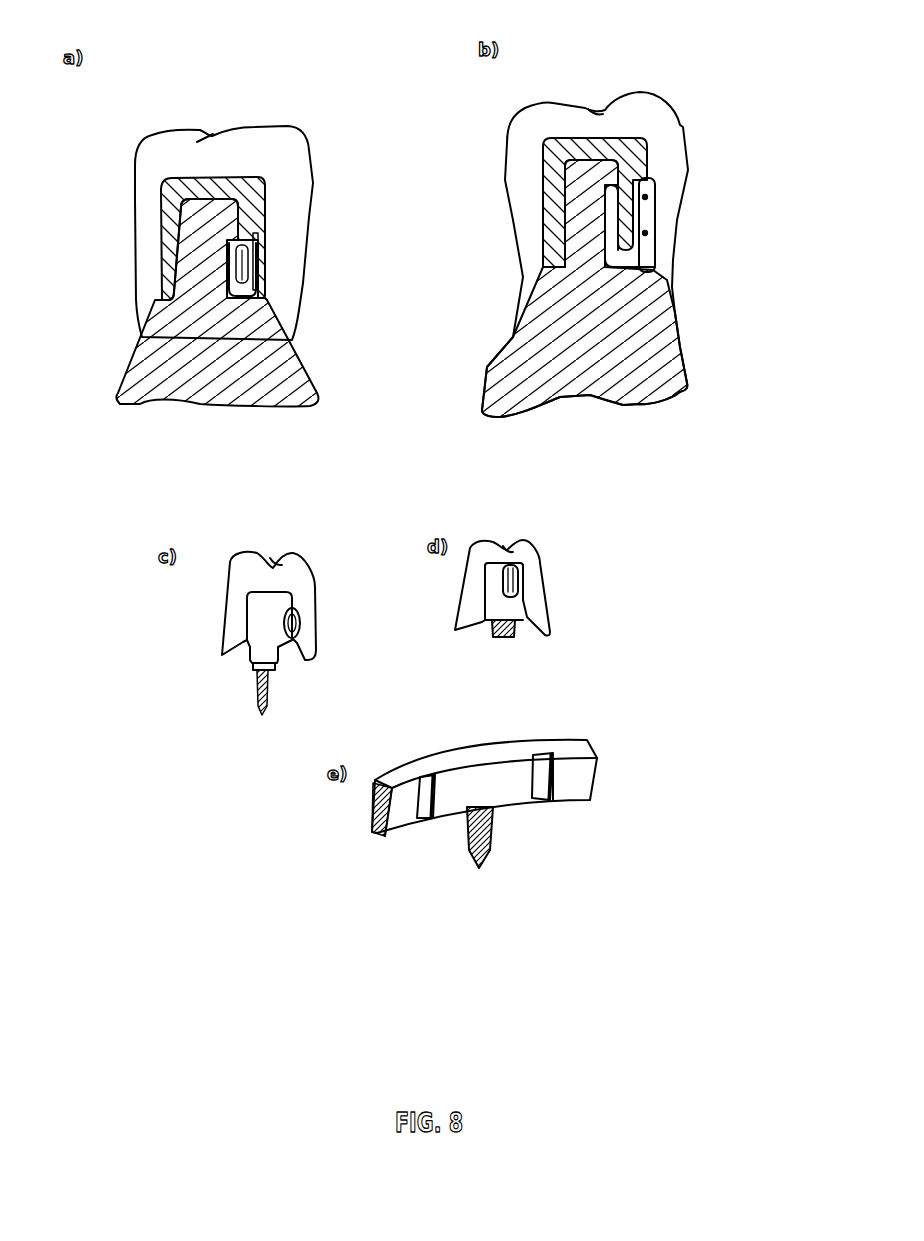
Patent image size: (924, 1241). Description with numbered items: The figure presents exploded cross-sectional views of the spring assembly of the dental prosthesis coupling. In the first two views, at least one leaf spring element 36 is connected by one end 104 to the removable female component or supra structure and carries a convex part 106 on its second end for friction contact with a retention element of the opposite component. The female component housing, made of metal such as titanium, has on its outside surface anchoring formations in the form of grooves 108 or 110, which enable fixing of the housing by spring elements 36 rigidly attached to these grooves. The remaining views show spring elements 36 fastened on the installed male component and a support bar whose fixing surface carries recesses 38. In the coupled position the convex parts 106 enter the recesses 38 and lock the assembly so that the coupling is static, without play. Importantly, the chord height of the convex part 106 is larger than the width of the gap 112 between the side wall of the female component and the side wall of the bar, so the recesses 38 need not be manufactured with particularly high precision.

The leaf spring element 36 is at (267, 266).
The recess 38 is at (432, 777).
The end of the spring element 104 is at (263, 250).
The convex part 106 is at (217, 279).
The groove 108 is at (258, 232).
The groove 110 is at (648, 152).
The gap 112 is at (233, 207).